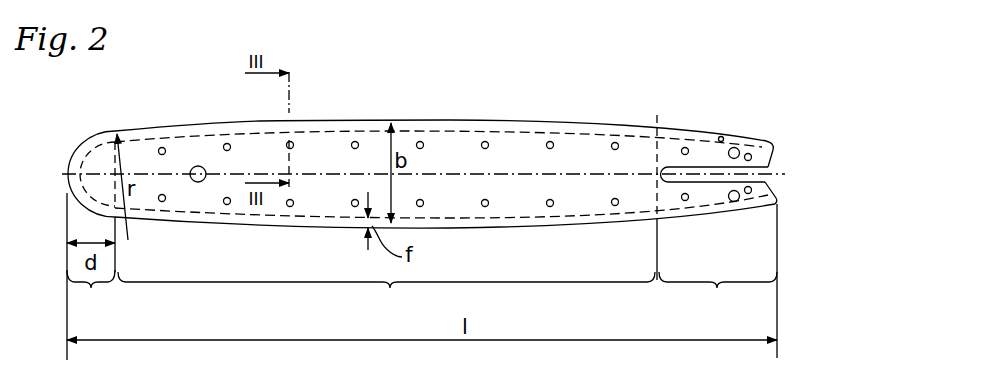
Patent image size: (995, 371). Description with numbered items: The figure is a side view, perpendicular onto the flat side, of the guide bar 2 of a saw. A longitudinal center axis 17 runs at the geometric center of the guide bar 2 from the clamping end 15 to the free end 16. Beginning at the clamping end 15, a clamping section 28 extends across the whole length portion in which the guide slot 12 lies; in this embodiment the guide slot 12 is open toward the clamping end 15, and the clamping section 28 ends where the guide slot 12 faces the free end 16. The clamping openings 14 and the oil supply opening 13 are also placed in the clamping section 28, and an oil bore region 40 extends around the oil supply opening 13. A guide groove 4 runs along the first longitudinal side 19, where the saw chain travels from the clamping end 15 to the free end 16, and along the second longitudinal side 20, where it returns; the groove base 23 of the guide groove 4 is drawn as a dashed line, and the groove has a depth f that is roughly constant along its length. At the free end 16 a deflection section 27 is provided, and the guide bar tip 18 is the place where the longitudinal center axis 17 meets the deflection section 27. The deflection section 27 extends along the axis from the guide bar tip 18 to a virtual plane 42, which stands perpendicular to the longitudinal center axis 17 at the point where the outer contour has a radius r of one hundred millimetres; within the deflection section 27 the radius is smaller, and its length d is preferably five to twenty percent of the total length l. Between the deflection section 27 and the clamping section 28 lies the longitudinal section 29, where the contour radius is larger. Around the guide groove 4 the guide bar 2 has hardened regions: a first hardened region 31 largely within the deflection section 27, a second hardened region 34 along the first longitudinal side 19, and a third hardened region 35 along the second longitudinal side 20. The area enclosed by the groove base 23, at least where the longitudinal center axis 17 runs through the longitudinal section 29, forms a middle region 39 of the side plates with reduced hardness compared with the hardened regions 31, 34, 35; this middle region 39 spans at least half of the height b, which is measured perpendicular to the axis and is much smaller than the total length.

The guide bar 2 is at (568, 120).
The guide groove 4 is at (623, 134).
The guide slot 12 is at (681, 170).
The oil supply opening 13 is at (721, 136).
The clamping openings 14 is at (746, 186).
The clamping end 15 is at (779, 156).
The free end 16 is at (70, 157).
The longitudinal center axis 17 is at (485, 175).
The guide bar tip 18 is at (65, 174).
The first longitudinal side 19 is at (322, 119).
The second longitudinal side 20 is at (299, 229).
The groove base 23 is at (150, 214).
The deflection section 27 is at (91, 276).
The clamping section 28 is at (718, 281).
The longitudinal section 29 is at (387, 217).
The first hardened region 31 is at (82, 139).
The second hardened region 34 is at (182, 125).
The third hardened region 35 is at (219, 216).
The middle region 39 is at (448, 150).
The oil bore region 40 is at (734, 147).
The plane 42 is at (101, 146).